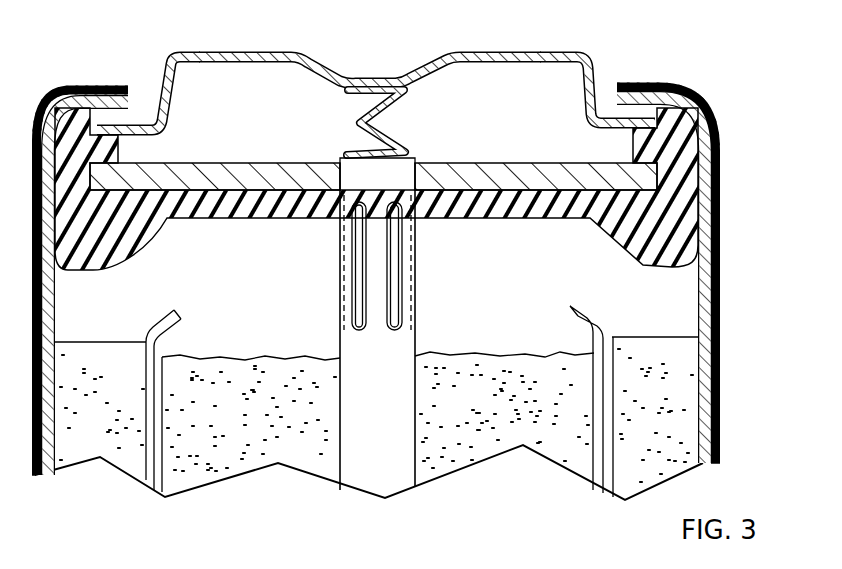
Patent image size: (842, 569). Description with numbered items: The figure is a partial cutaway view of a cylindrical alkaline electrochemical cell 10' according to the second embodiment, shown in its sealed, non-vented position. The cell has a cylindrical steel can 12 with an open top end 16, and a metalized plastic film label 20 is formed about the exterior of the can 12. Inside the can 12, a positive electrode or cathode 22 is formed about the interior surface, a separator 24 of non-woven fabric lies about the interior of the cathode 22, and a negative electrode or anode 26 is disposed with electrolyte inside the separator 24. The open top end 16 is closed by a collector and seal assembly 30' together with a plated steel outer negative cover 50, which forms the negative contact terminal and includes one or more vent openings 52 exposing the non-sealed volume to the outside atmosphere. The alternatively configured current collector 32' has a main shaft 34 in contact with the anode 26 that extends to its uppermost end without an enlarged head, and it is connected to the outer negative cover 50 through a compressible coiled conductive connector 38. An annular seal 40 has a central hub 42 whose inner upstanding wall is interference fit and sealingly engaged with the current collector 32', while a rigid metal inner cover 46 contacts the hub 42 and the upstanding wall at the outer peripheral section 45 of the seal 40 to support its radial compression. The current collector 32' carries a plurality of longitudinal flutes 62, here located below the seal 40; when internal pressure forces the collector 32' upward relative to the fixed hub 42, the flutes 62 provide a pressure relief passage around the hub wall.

The electrochemical cell 10' is at (409, 282).
The steel can 12 is at (723, 385).
The open top end 16 is at (595, 49).
The film label 20 is at (725, 341).
The positive electrode 22 is at (690, 435).
The separator 24 is at (145, 477).
The negative electrode 26 is at (205, 463).
The collector and seal assembly 30' is at (403, 87).
The current collector 32' is at (422, 426).
The main shaft 34 is at (395, 487).
The coiled conductive connector 38 is at (383, 128).
The seal 40 is at (673, 204).
The central hub 42 is at (334, 163).
The outer peripheral section 45 is at (700, 158).
The inner cover 46 is at (233, 167).
The outer negative cover 50 is at (182, 52).
The vent openings 52 is at (590, 80).
The longitudinal flutes 62 is at (358, 263).